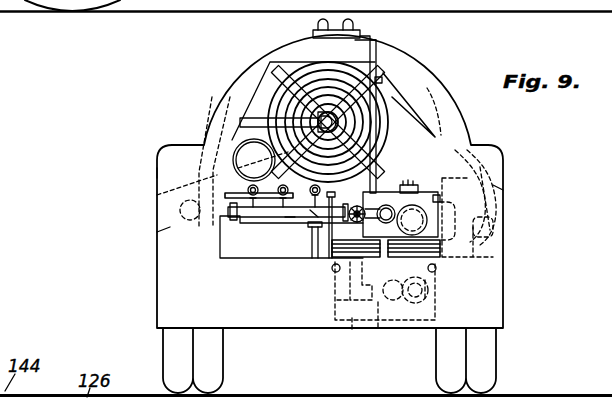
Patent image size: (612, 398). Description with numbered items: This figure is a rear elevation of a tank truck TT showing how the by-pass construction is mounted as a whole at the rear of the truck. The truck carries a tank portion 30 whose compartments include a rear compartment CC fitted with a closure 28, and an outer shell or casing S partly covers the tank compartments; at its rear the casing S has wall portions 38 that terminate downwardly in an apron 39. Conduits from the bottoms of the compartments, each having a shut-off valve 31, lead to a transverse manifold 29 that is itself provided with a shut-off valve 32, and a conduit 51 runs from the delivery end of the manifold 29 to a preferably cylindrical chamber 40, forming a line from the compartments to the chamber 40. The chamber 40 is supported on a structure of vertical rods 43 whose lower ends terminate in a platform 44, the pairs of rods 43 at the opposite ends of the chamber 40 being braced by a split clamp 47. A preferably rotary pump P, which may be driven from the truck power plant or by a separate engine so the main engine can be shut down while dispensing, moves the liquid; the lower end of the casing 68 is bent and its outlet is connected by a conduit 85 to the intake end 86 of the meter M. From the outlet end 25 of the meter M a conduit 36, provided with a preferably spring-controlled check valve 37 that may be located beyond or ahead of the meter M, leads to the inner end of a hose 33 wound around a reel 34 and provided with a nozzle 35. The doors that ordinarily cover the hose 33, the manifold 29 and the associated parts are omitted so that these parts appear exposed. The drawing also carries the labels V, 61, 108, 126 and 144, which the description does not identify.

The tank truck TT is at (511, 165).
The rear tank compartment CC is at (260, 100).
The closure 28 is at (313, 33).
The pipe 144 is at (370, 42).
The hose 33 is at (389, 107).
The reel 34 is at (385, 97).
The conduit 36 is at (253, 120).
The outer shell or casing S is at (203, 127).
The vacuum gauge V is at (260, 160).
The check valve 37 is at (157, 173).
The wall portions 38 is at (170, 227).
The tank portion 30 is at (465, 128).
The nozzle 35 is at (502, 223).
The meter M is at (258, 223).
The outlet end of the meter 25 is at (222, 235).
The transverse manifold 29 is at (268, 213).
The shut-off valve 31 is at (285, 223).
The intake end of the meter 86 is at (295, 223).
The conduit 85 is at (308, 262).
The apron 39 is at (269, 312).
The shut-off valve 32 is at (351, 223).
The conduit 51 is at (383, 208).
The chamber 40 is at (425, 192).
The drum 61 is at (412, 220).
The terminal block 126 is at (407, 184).
The radiator 108 is at (440, 243).
The split clamp 47 is at (436, 272).
The rotary pump P is at (410, 330).
The vertical rods 43 is at (432, 300).
The casing 68 is at (378, 328).
The platform 44 is at (352, 332).